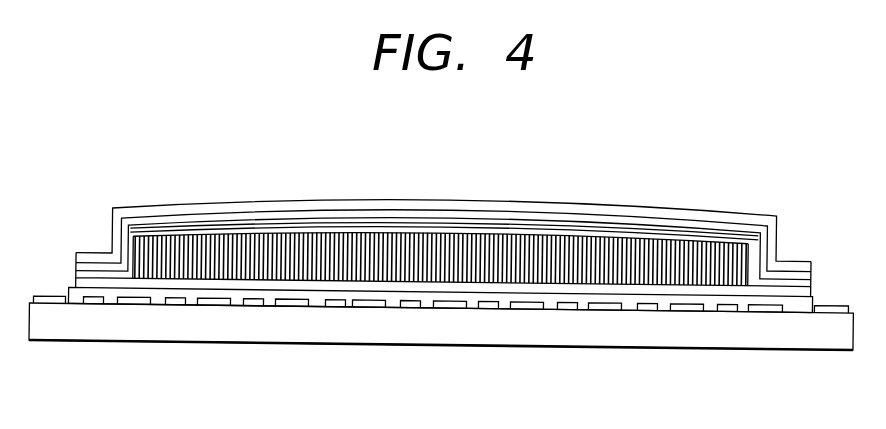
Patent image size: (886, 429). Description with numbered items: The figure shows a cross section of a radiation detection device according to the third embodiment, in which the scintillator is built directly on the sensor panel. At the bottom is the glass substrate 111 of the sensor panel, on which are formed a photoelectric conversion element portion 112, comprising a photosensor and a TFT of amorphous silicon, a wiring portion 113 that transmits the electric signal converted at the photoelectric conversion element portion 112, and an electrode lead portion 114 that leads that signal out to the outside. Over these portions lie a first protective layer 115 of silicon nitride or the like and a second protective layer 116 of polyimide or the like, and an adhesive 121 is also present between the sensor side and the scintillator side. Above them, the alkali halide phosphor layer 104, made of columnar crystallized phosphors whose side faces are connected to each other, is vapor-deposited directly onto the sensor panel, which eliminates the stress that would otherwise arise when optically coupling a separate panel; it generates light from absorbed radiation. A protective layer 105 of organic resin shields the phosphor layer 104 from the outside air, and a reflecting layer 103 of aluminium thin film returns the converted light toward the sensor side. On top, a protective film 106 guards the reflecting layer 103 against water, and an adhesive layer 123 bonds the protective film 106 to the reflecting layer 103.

The reflecting layer 103 is at (472, 222).
The alkali halide phosphor layer 104 is at (287, 230).
The protective layer 105 is at (195, 230).
The protective film 106 is at (604, 212).
The glass substrate 111 is at (197, 330).
The photoelectric conversion element portion 112 is at (296, 305).
The wiring portion 113 is at (340, 302).
The electrode lead portion 114 is at (53, 300).
The first protective layer 115 is at (472, 298).
The second protective layer 116 is at (585, 288).
The adhesive 121 is at (113, 278).
The adhesive layer 123 is at (363, 212).